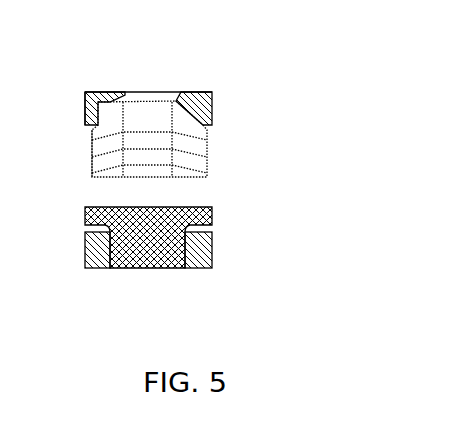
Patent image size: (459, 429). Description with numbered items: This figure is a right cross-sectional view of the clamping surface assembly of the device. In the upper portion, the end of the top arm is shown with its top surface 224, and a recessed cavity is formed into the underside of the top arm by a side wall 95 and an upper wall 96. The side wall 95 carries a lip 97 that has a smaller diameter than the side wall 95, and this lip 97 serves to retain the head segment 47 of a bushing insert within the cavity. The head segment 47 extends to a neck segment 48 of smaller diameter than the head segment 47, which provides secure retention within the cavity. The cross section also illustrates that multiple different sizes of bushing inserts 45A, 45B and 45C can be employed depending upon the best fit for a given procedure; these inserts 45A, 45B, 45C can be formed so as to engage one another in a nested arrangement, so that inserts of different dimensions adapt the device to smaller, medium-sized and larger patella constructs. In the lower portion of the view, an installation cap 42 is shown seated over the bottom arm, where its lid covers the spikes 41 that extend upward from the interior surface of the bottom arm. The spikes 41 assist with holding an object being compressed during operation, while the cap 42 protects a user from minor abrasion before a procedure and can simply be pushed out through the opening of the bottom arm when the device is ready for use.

The top surface 224 is at (148, 68).
The upper wall 96 is at (111, 99).
The head segment 47 is at (199, 109).
The side wall 95 is at (93, 108).
The neck segment 48 is at (189, 110).
The lip 97 is at (98, 128).
The bushing insert 45A is at (206, 133).
The bushing insert 45B is at (206, 148).
The bushing insert 45C is at (205, 168).
The installation cap 42 is at (203, 208).
The spikes 41 is at (188, 234).